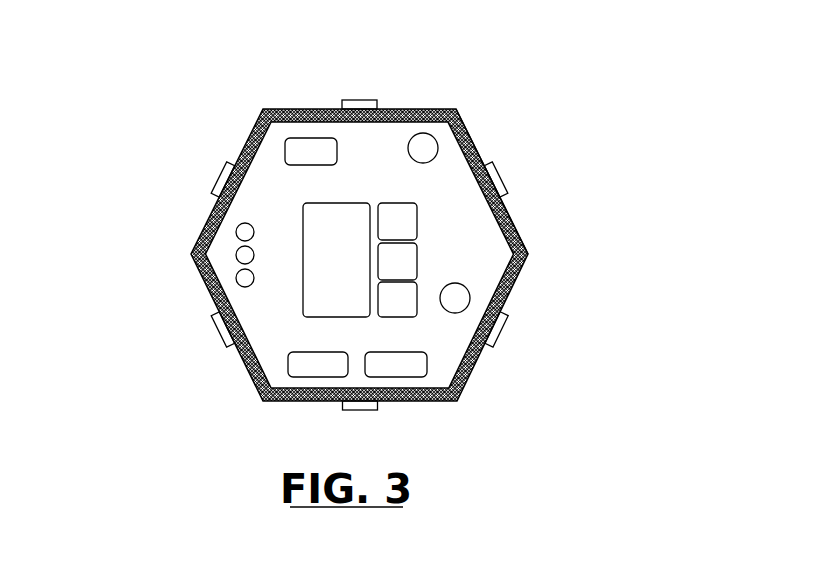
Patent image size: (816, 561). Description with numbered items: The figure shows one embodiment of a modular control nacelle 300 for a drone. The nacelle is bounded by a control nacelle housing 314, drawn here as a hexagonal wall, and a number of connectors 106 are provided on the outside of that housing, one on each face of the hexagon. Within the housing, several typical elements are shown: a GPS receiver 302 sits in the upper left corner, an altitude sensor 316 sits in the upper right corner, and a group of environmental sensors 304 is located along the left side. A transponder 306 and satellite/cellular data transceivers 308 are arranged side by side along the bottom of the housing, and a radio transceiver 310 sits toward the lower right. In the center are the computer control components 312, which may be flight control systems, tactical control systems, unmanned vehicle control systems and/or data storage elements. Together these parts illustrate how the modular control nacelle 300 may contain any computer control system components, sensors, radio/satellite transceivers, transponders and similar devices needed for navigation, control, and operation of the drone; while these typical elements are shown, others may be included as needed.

The modular control nacelle 300 is at (143, 118).
The GPS receiver 302 is at (295, 143).
The environmental sensors 304 is at (245, 255).
The transponder 306 is at (300, 367).
The satellite/cellular data transceivers 308 is at (405, 367).
The radio transceiver 310 is at (455, 298).
The computer control components 312 is at (405, 222).
The control nacelle housing 314 is at (478, 152).
The altitude sensor 316 is at (423, 148).
The connectors 106 is at (368, 100).